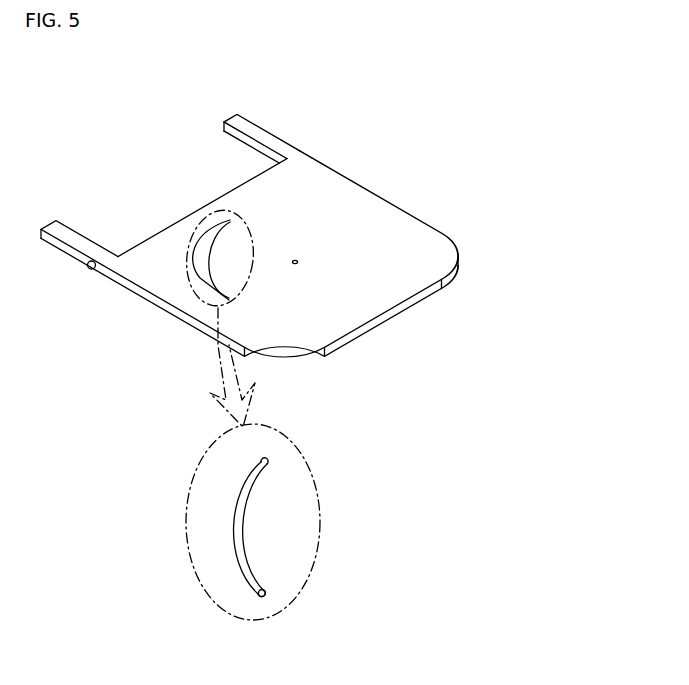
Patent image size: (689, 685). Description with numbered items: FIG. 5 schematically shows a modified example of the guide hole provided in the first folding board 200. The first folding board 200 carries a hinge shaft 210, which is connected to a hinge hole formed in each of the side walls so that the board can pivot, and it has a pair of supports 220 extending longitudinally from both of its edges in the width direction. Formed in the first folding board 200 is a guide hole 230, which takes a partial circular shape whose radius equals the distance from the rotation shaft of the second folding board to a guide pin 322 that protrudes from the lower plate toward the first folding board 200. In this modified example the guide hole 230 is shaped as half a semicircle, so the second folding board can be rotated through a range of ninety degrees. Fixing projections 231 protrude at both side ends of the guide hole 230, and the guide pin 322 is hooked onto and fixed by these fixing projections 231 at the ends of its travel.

The first folding board 200 is at (400, 231).
The supports 220 is at (249, 130).
The hinge shaft 210 is at (90, 270).
The guide hole 230 is at (200, 281).
The fixing projections 231 is at (260, 466).
The guide pin 322 is at (262, 597).